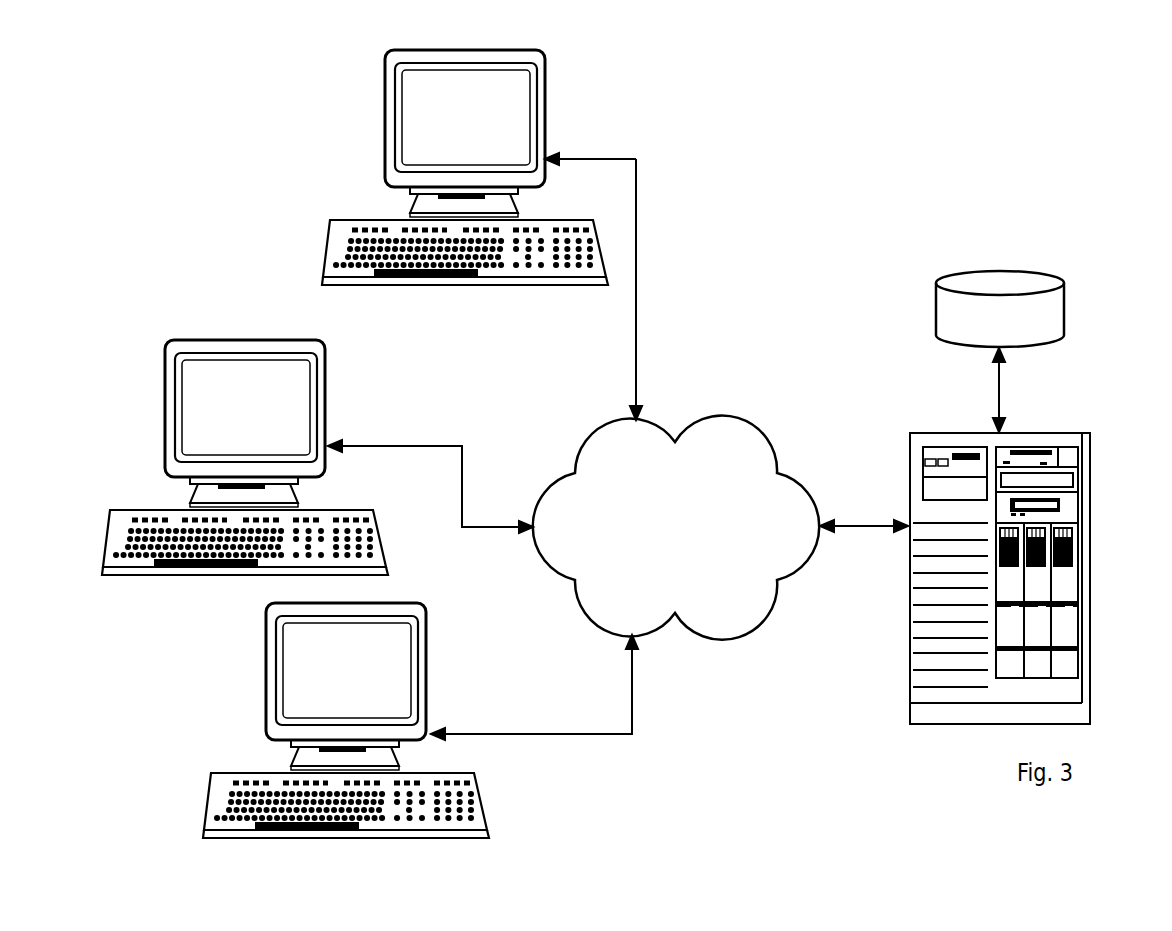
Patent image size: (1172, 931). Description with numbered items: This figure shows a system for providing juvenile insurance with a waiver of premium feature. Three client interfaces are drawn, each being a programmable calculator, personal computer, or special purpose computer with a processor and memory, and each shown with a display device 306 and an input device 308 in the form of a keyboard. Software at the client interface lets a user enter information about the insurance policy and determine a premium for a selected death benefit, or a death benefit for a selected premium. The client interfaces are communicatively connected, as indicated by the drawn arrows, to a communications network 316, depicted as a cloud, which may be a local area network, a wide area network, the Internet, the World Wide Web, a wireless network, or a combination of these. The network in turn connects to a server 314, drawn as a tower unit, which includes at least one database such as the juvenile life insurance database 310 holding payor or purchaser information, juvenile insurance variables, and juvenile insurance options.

The display device 306 is at (435, 99).
The input device 308 is at (400, 288).
The juvenile life insurance database 310 is at (933, 310).
The server 314 is at (1090, 573).
The communications network 316 is at (718, 420).